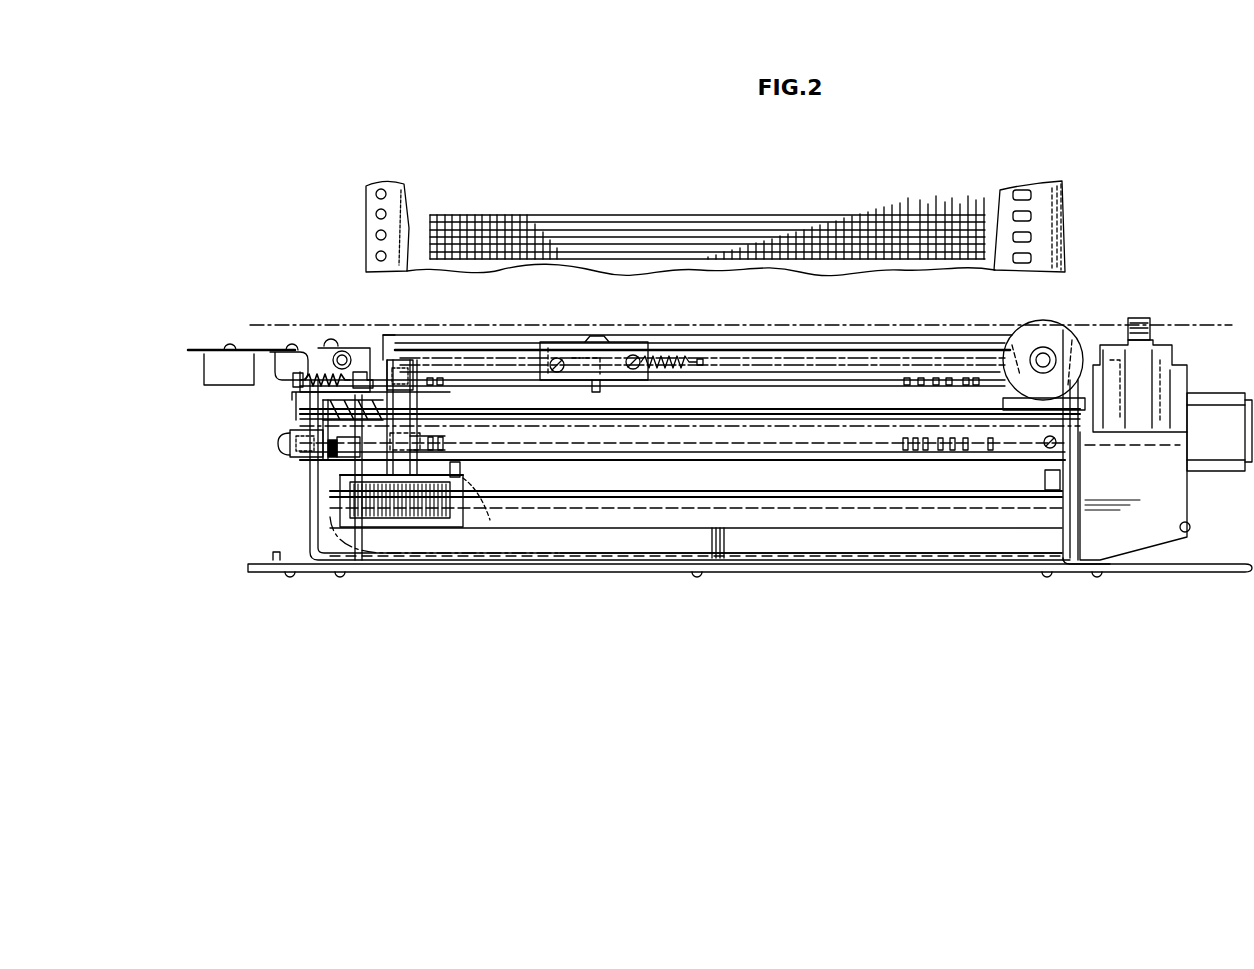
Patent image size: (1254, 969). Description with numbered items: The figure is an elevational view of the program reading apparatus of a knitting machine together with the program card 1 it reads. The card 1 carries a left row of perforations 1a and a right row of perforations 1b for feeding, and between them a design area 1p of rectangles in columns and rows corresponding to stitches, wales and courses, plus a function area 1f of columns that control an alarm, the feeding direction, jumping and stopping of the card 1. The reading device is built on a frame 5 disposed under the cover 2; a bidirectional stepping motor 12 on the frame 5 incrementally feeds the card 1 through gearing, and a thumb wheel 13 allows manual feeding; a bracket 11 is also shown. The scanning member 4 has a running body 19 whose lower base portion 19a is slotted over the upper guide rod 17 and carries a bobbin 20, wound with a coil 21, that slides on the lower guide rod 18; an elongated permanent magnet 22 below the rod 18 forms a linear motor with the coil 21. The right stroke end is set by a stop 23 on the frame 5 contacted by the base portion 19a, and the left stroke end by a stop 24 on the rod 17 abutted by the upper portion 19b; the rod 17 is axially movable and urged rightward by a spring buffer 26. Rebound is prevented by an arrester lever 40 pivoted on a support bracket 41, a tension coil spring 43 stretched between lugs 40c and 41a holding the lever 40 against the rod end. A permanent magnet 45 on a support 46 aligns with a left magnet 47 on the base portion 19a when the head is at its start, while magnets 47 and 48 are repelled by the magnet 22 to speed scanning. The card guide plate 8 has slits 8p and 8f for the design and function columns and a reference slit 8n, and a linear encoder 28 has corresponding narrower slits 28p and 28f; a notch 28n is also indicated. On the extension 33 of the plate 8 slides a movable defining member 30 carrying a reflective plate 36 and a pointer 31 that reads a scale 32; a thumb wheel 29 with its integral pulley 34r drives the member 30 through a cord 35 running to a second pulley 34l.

The program card 1 is at (710, 209).
The row of perforations 1a is at (376, 255).
The row of perforations 1b is at (1031, 258).
The design area 1p is at (425, 186).
The function area 1f is at (915, 188).
The cover 2 is at (1064, 332).
The scanning member 4 is at (425, 530).
The frame 5 is at (313, 520).
The card guide plate 8 is at (738, 402).
The slit 8n is at (398, 360).
The slits 8p is at (430, 377).
The slits 8f is at (976, 378).
The motor bracket 11 is at (1172, 528).
The bidirectional stepping motor 12 is at (1217, 395).
The thumb wheel 13 is at (1140, 318).
The upper guide rod 17 is at (606, 415).
The lower guide rod 18 is at (640, 510).
The running body 19 is at (478, 480).
The lower base portion 19a is at (466, 480).
The upper portion 19b is at (413, 400).
The bobbin 20 is at (456, 520).
The coil 21 is at (386, 540).
The permanent magnet 22 is at (748, 548).
The stop 23 is at (1045, 478).
The stop 24 is at (345, 449).
The spring buffer 26 is at (312, 412).
The linear encoder 28 is at (808, 458).
The slits 28p is at (432, 437).
The selector notch 28n is at (443, 437).
The slits 28f is at (965, 452).
The thumb wheel 29 is at (1036, 340).
The movable defining member 30 is at (634, 355).
The pointer 31 is at (621, 353).
The scale 32 is at (738, 340).
The extension 33 is at (798, 350).
The pulley 34l is at (343, 350).
The pulley 34r is at (1043, 348).
The cord 35 is at (845, 362).
The reflective plate 36 is at (600, 390).
The arrester lever 40 is at (312, 398).
The lug 40c is at (358, 372).
The support bracket 41 is at (282, 447).
The lug 41a is at (292, 385).
The tension coil spring 43 is at (312, 375).
The permanent magnet 45 is at (333, 455).
The support 46 is at (284, 438).
The permanent magnet 47 is at (352, 462).
The permanent magnet 48 is at (468, 468).